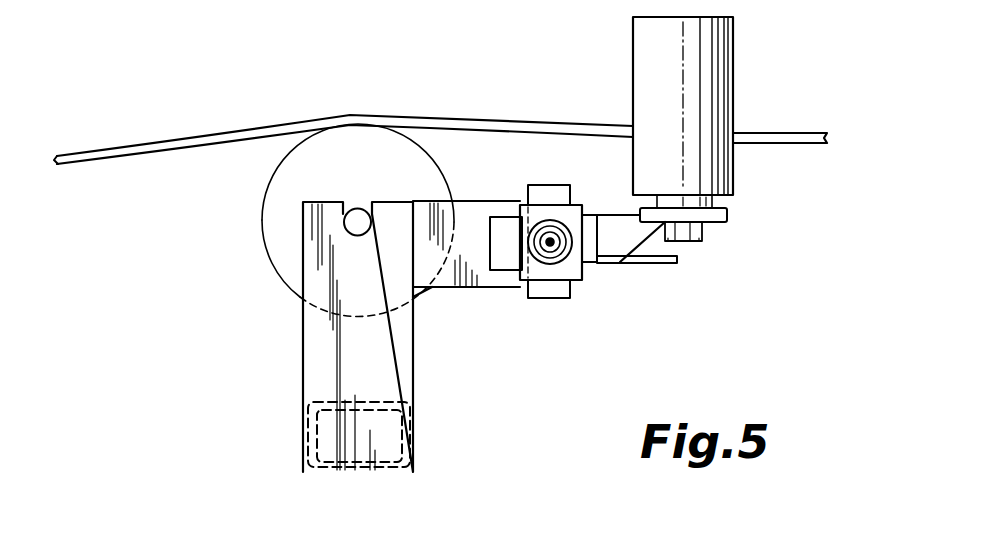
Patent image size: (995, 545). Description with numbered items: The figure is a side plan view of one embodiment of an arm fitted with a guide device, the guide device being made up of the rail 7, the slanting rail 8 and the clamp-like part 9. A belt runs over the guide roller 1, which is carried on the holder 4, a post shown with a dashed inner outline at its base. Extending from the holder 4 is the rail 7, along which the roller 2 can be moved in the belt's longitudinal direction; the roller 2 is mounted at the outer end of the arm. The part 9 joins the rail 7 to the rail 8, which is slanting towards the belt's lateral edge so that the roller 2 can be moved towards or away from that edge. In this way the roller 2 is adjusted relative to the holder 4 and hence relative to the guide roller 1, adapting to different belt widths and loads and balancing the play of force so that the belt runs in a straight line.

The guide roller 1 is at (270, 213).
The roller 2 is at (724, 52).
The holder 4 is at (320, 441).
The rail 7 is at (480, 275).
The rail 8 is at (592, 272).
The guide device component 9 is at (550, 244).